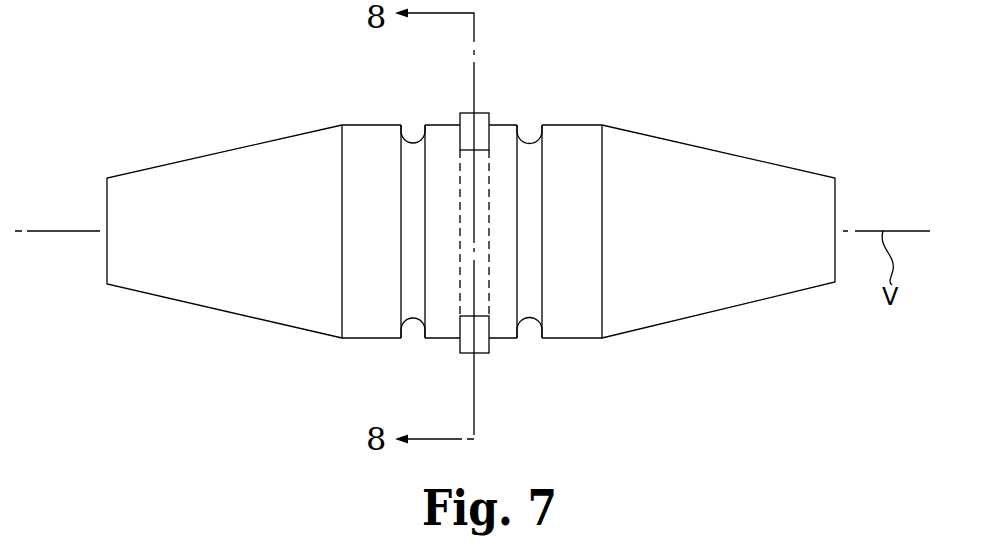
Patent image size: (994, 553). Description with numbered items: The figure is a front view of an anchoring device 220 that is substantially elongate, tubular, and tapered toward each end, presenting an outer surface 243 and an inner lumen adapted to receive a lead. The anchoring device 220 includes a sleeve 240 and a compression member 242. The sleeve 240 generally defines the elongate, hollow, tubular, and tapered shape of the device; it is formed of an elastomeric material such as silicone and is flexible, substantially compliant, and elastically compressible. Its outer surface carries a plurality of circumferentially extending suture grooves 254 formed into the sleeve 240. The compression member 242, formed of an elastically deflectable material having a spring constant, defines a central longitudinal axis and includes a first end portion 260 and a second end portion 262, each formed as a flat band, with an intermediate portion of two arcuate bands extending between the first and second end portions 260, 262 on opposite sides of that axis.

The anchoring device 220 is at (245, 45).
The sleeve 240 is at (768, 180).
The compression member 242 is at (489, 119).
The outer surface 243 is at (712, 132).
The suture grooves 254 is at (412, 318).
The first end portion 260 is at (458, 102).
The second end portion 262 is at (493, 362).